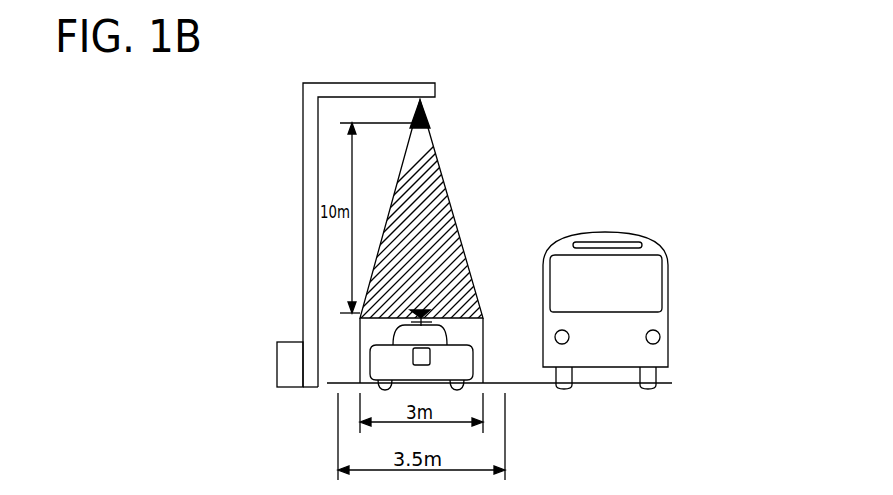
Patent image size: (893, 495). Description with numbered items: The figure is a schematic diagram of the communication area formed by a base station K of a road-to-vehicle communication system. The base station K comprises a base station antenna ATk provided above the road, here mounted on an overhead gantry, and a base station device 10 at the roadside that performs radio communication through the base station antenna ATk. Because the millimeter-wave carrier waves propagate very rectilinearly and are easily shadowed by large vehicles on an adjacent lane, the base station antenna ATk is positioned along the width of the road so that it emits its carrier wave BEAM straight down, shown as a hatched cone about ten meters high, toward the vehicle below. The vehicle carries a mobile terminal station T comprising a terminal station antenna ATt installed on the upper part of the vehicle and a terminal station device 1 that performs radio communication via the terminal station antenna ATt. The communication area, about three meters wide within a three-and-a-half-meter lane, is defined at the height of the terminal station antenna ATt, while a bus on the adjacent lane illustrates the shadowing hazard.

The base station K is at (212, 213).
The base station device 10 is at (291, 342).
The base station antenna ATk is at (413, 118).
The radio beam BEAM is at (435, 155).
The mobile terminal station T is at (568, 147).
The terminal station antenna ATt is at (432, 306).
The terminal station device 1 is at (433, 355).